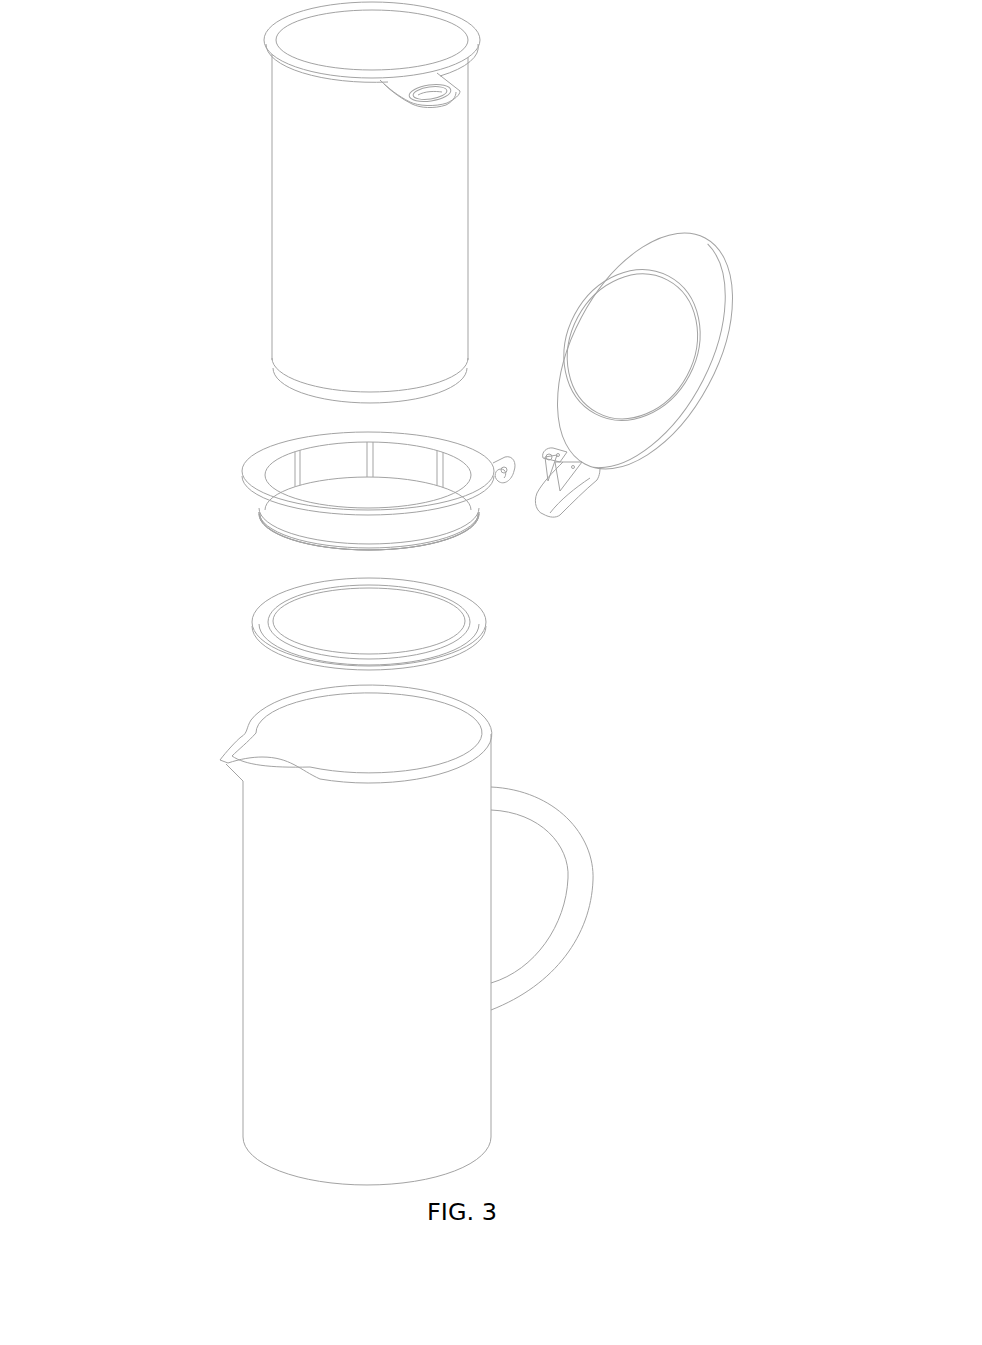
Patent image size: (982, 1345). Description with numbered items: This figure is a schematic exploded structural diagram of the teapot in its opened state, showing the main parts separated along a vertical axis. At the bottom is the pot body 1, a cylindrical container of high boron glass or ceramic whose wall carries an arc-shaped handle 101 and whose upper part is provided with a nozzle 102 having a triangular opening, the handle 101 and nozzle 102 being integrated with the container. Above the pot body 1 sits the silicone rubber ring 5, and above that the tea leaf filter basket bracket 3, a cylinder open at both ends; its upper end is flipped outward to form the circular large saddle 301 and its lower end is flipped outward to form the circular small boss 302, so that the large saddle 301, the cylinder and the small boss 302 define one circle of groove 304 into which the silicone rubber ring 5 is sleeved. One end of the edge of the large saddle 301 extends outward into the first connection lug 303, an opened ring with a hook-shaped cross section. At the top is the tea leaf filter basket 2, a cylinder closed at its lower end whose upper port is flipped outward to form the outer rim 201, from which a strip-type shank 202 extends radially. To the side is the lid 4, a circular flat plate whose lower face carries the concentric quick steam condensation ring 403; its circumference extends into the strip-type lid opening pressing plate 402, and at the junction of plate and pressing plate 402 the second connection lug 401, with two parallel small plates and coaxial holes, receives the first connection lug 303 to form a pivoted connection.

The pot body 1 is at (419, 935).
The arc-shaped handle 101 is at (583, 880).
The nozzle 102 is at (228, 752).
The tea leaf filter basket 2 is at (354, 202).
The outer rim 201 is at (267, 42).
The strip-type shank 202 is at (456, 94).
The tea leaf filter basket bracket 3 is at (367, 528).
The large saddle 301 is at (250, 467).
The small boss 302 is at (265, 527).
The first connection lug 303 is at (505, 485).
The groove 304 is at (252, 508).
The lid 4 is at (691, 379).
The second connection lug 401 is at (558, 475).
The lid opening pressing plate 402 is at (550, 520).
The quick steam condensation ring 403 is at (562, 447).
The silicone rubber ring 5 is at (268, 613).